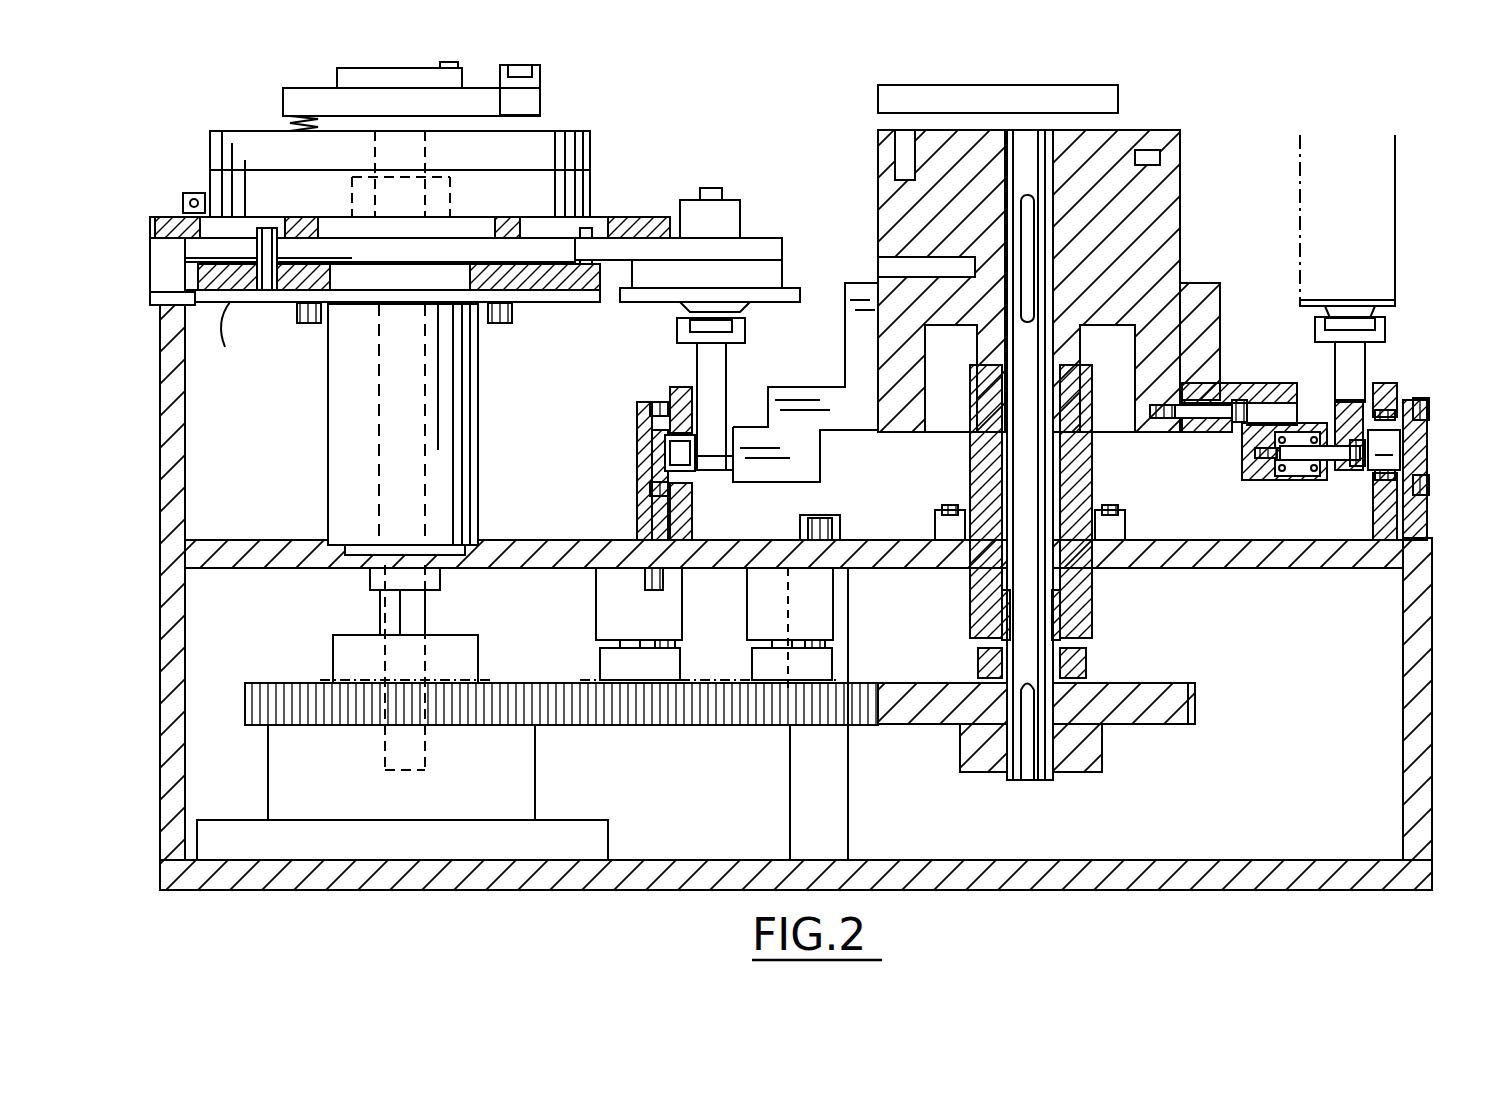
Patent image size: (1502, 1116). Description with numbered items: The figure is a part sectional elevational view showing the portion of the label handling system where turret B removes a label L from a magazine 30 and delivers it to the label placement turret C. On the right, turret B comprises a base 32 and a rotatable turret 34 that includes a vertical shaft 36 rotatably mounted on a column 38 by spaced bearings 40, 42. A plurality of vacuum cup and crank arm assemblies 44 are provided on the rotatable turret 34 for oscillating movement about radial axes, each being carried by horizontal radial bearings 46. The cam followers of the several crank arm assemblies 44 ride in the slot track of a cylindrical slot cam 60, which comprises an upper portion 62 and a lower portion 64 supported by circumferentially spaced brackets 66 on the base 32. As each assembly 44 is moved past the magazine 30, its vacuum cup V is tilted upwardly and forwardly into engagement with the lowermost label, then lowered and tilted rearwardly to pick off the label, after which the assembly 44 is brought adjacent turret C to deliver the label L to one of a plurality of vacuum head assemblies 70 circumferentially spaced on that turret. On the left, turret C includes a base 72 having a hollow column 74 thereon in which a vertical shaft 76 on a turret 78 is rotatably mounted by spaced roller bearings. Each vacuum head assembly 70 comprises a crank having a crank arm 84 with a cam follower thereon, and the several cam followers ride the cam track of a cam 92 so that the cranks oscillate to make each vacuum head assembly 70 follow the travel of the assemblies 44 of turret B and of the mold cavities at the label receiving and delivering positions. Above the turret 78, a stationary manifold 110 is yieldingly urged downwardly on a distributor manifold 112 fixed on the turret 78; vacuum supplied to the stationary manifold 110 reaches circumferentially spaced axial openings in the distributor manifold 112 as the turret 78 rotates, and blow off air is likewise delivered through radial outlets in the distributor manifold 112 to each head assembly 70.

The magazine 30 is at (1398, 178).
The base 32 is at (848, 785).
The rotatable turret 34 is at (1178, 205).
The vertical shaft 36 is at (1050, 492).
The column 38 is at (1093, 460).
The bearing 40 is at (990, 385).
The bearing 42 is at (1075, 613).
The vacuum cup and crank arm assembly 44 is at (697, 360).
The horizontal radial bearing 46 is at (1300, 482).
The cylindrical slot cam 60 is at (1403, 400).
The upper portion 62 is at (665, 392).
The lower portion 64 is at (692, 520).
The bracket 66 is at (640, 502).
The vacuum head assembly 70 is at (786, 268).
The base 72 is at (572, 822).
The hollow column 74 is at (328, 420).
The vertical shaft 76 is at (425, 610).
The turret 78 is at (630, 217).
The crank arm 84 is at (758, 242).
The cam 92 is at (246, 330).
The stationary manifold 110 is at (572, 125).
The distributor manifold 112 is at (598, 170).